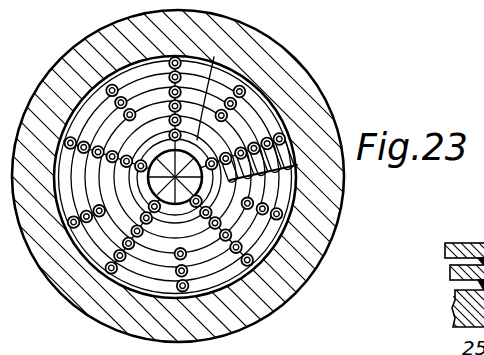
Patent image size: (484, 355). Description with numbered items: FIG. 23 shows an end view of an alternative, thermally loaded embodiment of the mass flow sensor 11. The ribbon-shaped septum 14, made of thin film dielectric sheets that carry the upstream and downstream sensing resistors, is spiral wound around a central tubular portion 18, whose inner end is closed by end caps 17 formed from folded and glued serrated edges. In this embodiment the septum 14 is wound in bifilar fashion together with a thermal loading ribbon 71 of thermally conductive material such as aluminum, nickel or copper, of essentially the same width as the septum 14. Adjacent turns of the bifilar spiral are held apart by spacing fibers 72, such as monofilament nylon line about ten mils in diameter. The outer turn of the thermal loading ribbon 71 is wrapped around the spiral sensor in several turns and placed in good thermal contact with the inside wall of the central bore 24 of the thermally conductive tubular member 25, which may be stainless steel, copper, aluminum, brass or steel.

The mass flow sensor 11 is at (219, 86).
The ribbon-shaped septum 14 is at (148, 145).
The end caps 17 is at (157, 181).
The central tubular portion 18 is at (168, 214).
The central bore 24 is at (135, 284).
The thermally conductive tubular member 25 is at (340, 243).
The thermal loading ribbon 71 is at (213, 87).
The spacing fibers 72 is at (294, 163).